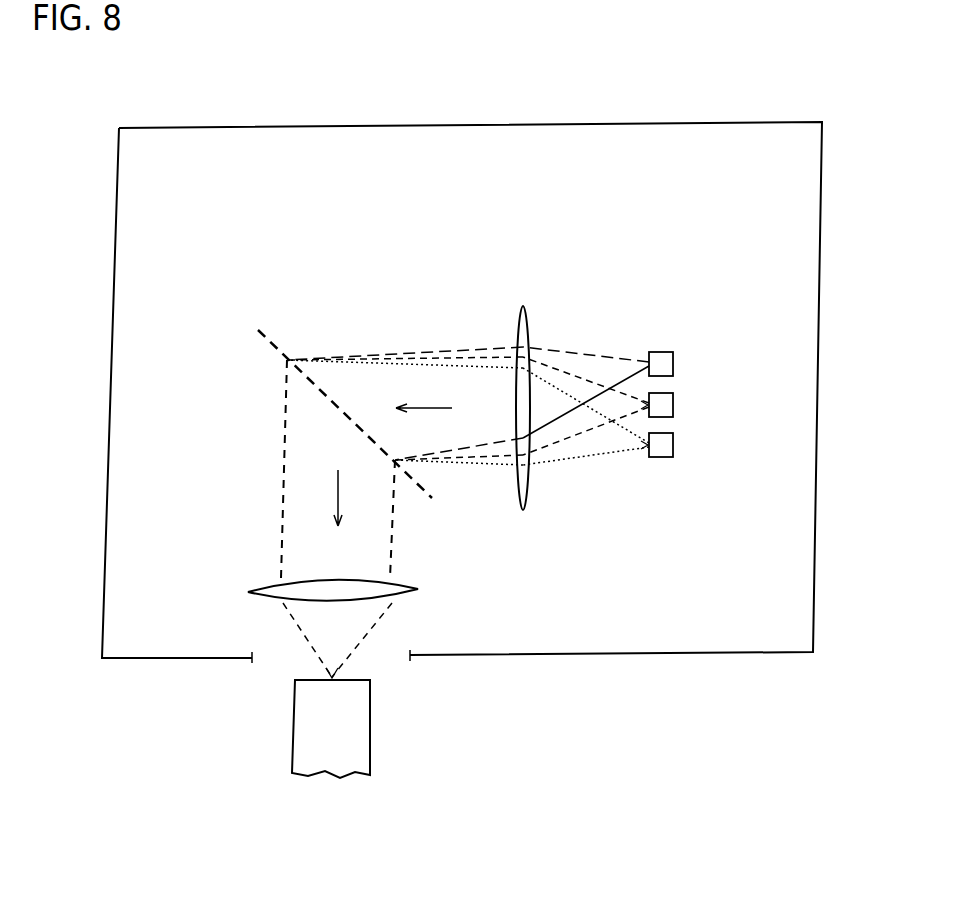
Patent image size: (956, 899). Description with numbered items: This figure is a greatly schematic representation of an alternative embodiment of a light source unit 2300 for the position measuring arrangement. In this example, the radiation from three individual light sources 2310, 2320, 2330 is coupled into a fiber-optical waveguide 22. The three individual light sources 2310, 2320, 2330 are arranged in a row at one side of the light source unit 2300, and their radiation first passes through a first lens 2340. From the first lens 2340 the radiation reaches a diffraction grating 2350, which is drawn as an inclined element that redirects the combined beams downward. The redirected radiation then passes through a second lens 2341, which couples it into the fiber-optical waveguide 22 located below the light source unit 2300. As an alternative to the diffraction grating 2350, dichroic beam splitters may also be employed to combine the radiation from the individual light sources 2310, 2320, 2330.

The fiber-optical waveguide 22 is at (305, 730).
The light source unit 2300 is at (728, 655).
The individual light source 2310 is at (673, 364).
The individual light source 2320 is at (673, 405).
The individual light source 2330 is at (673, 445).
The first lens 2340 is at (525, 480).
The second lens 2341 is at (270, 587).
The diffraction grating 2350 is at (276, 346).